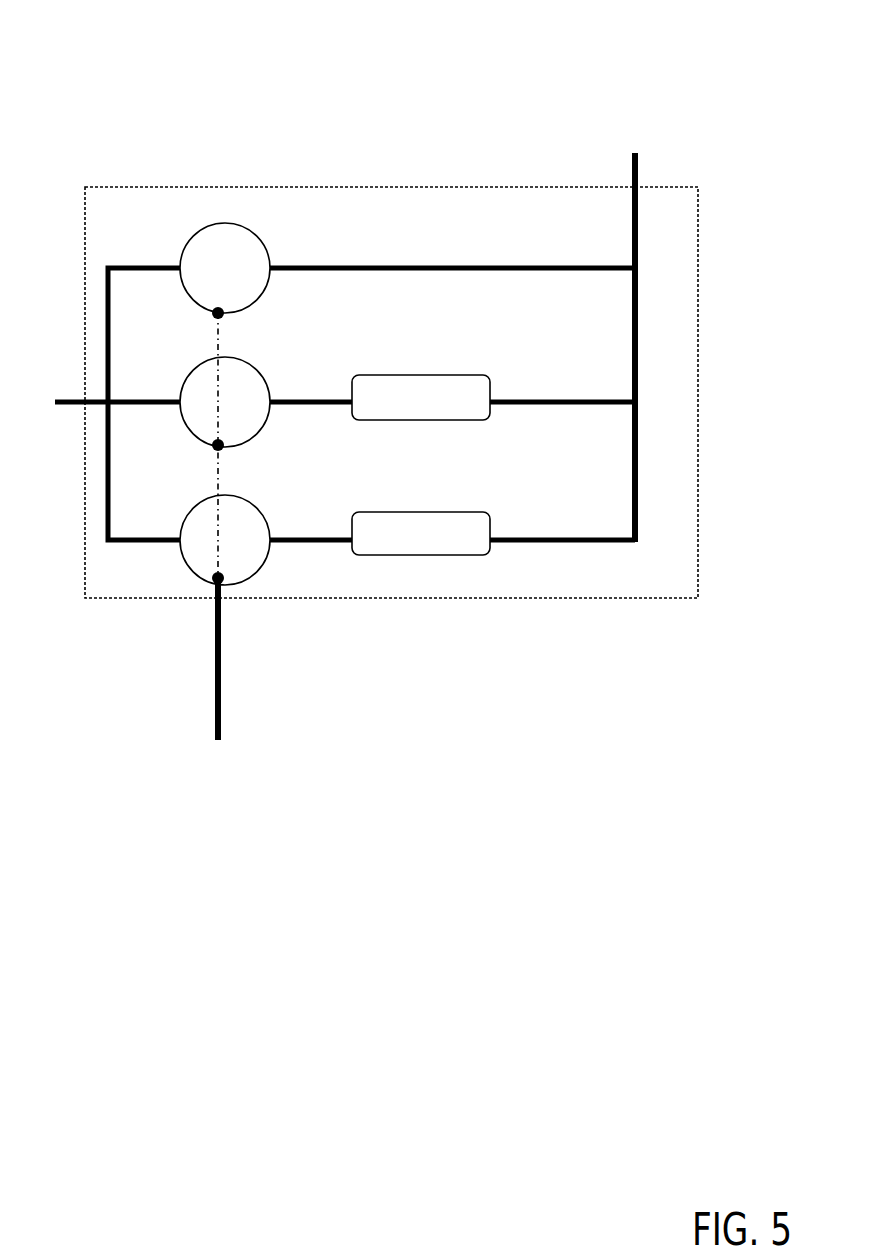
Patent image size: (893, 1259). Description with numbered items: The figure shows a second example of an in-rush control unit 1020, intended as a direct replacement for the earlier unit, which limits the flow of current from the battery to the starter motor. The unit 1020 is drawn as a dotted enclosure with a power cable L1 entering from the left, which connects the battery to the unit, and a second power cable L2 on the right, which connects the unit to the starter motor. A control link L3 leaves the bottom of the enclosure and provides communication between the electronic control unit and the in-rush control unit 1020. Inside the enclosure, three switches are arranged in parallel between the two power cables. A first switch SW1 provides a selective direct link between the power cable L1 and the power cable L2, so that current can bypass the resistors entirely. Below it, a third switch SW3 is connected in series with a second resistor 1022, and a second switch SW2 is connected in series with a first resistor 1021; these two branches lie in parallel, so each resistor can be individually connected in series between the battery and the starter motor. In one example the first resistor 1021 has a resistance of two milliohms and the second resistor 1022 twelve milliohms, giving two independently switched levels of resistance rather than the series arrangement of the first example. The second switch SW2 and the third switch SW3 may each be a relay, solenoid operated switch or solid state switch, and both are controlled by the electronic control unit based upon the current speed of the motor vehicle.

The in-rush control unit 1020 is at (210, 183).
The first resistor 1021 is at (443, 512).
The second resistor 1022 is at (443, 377).
The power cable L1 is at (63, 397).
The second power cable L2 is at (632, 170).
The control link L3 is at (217, 642).
The first switch SW1 is at (270, 285).
The second switch SW2 is at (255, 567).
The third switch SW3 is at (270, 418).